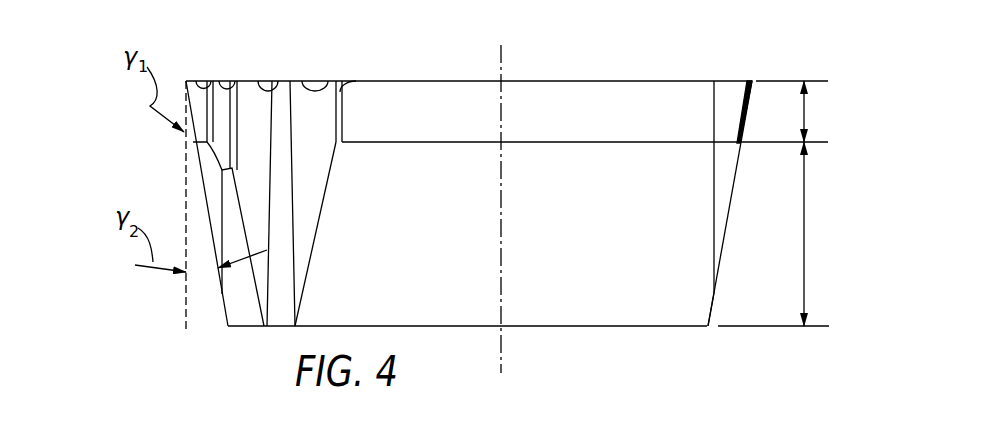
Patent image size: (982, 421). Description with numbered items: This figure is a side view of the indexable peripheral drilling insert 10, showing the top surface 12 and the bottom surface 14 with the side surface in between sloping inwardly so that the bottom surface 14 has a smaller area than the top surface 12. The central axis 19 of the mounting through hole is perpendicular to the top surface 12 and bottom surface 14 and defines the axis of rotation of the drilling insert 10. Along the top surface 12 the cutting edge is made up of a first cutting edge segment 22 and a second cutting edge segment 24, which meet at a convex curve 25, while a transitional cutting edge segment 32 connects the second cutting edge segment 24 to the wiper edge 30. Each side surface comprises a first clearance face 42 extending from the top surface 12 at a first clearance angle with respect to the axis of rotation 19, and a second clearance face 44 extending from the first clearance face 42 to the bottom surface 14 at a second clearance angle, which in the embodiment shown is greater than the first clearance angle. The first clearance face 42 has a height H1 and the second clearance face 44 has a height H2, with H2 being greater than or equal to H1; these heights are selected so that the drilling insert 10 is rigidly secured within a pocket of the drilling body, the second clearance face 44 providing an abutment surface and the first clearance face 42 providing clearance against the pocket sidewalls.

The drilling insert 10 is at (112, 100).
The top surface 12 is at (593, 80).
The bottom surface 14 is at (420, 326).
The central axis 19 is at (501, 63).
The first cutting edge segment 22 is at (538, 82).
The second cutting edge segment 24 is at (327, 80).
The convex curve 25 is at (355, 80).
The wiper edge 30 is at (197, 127).
The transitional cutting edge segment 32 is at (274, 80).
The first clearance face 42 is at (635, 95).
The second clearance face 44 is at (626, 312).
The first clearance face height H1 is at (804, 110).
The second clearance face height H2 is at (804, 235).